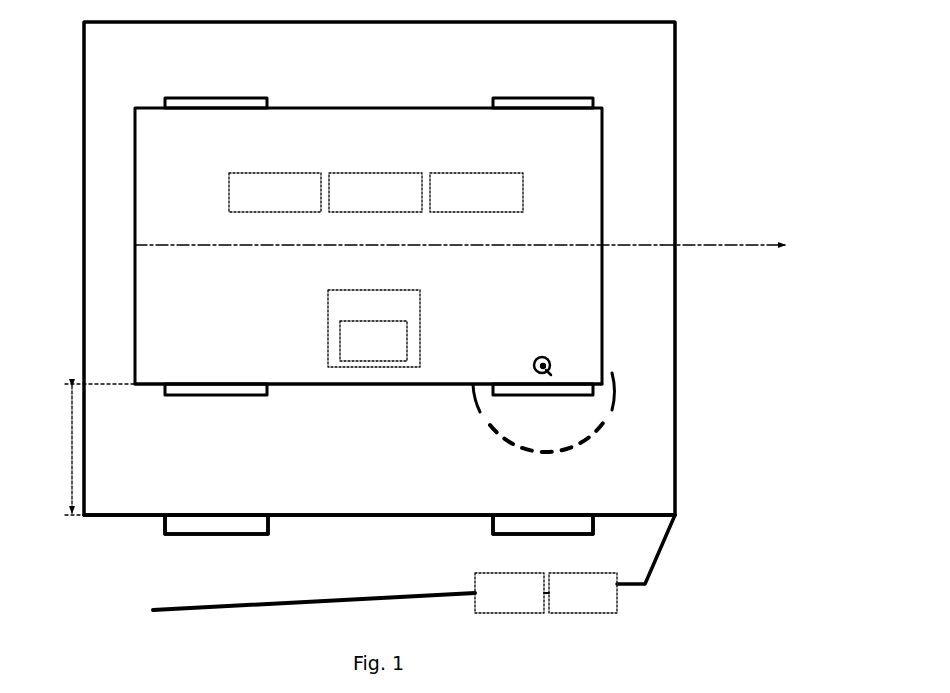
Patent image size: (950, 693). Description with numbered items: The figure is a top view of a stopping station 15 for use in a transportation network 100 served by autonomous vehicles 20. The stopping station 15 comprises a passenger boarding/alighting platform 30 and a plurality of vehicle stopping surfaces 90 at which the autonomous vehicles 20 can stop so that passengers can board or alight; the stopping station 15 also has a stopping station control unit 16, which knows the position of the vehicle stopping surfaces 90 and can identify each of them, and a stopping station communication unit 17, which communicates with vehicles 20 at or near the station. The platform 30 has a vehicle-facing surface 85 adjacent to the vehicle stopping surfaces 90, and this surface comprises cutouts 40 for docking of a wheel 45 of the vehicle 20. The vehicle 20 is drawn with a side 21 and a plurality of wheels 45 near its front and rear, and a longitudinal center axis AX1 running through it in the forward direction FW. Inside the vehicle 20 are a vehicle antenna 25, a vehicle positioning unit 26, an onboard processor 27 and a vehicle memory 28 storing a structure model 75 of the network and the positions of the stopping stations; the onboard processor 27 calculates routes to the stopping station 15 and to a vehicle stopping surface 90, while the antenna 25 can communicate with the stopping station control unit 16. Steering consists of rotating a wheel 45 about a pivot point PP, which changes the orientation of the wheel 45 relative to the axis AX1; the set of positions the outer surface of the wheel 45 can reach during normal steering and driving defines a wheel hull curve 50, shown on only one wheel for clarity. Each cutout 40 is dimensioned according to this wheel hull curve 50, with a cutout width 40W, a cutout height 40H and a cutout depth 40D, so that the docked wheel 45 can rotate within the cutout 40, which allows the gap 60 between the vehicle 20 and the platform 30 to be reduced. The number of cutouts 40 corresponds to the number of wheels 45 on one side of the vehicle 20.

The transportation network 100 is at (433, 268).
The vehicle stopping surface 90 is at (677, 193).
The autonomous vehicle 20 is at (368, 246).
The side 21 is at (155, 387).
The wheel 45 is at (545, 97).
The vehicle antenna 25 is at (275, 192).
The vehicle positioning unit 26 is at (375, 192).
The onboard processor 27 is at (476, 192).
The vehicle memory 28 is at (374, 328).
The structure model 75 is at (373, 341).
The longitudinal center axis AX1 is at (374, 247).
The forward direction FW is at (742, 248).
The wheel hull curve 50 is at (615, 390).
The pivot point PP is at (546, 374).
The cutout 40 is at (379, 538).
The cutout width 40W is at (200, 538).
The cutout height 40H is at (379, 524).
The cutout depth 40D is at (172, 523).
The vehicle-facing surface 85 is at (380, 512).
The passenger boarding/alighting platform 30 is at (379, 542).
The gap 60 is at (89, 449).
The stopping station 15 is at (431, 562).
The stopping station control unit 16 is at (509, 593).
The stopping station communication unit 17 is at (583, 593).